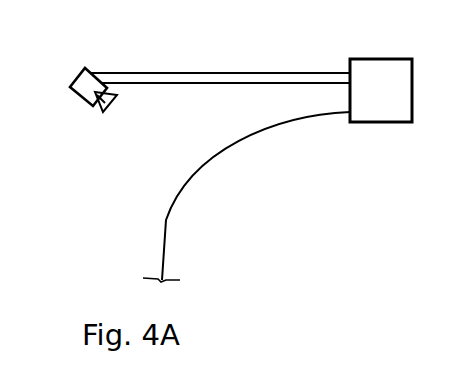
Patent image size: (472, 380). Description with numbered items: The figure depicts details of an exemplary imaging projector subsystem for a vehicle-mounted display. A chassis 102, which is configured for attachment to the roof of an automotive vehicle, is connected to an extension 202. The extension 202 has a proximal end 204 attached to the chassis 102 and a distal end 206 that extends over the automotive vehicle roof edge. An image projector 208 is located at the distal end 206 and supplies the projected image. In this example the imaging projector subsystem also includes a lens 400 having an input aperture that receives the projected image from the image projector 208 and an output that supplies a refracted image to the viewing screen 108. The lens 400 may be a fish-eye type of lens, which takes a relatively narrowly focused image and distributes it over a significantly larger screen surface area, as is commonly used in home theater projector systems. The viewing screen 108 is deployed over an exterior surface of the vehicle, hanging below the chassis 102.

The chassis 102 is at (402, 104).
The viewing screen 108 is at (168, 213).
The extension 202 is at (190, 66).
The proximal end 204 is at (349, 68).
The distal end 206 is at (88, 70).
The image projector 208 is at (78, 78).
The lens 400 is at (102, 112).